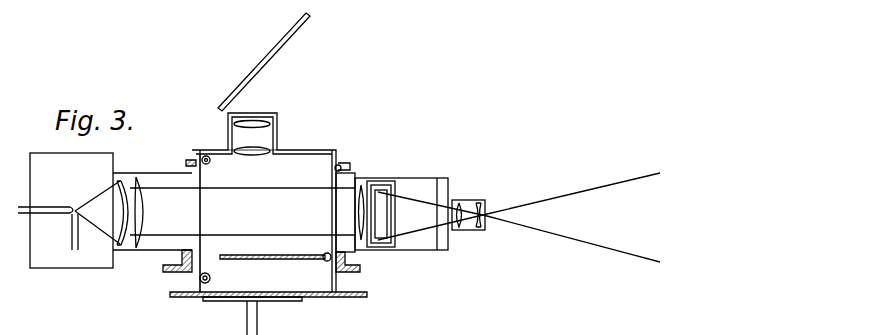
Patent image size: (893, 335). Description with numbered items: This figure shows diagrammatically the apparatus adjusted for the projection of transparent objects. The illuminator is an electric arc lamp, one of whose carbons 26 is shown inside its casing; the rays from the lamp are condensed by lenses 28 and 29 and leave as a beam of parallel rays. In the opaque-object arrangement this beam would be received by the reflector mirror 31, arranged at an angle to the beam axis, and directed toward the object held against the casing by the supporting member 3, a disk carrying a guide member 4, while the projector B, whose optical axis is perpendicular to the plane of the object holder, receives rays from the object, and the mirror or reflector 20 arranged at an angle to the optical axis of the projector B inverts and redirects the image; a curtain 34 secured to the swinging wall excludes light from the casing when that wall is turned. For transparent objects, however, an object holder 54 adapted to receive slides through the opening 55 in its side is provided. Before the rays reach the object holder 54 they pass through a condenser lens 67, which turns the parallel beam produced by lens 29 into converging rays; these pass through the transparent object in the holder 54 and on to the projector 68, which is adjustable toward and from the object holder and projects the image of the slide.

The mirror or reflector 20 is at (264, 62).
The carbon of the arc lamp 26 is at (72, 232).
The condensing lens 28 is at (123, 185).
The condensing lens 29 is at (142, 184).
The reflector mirror 31 is at (272, 259).
The curtain 34 is at (200, 278).
The supporting member 3 is at (230, 301).
The guide member 4 is at (258, 318).
The object holder 54 is at (390, 182).
The opening 55 is at (382, 222).
The condenser lens 67 is at (363, 186).
The projector 68 is at (470, 200).
The projector B is at (262, 138).